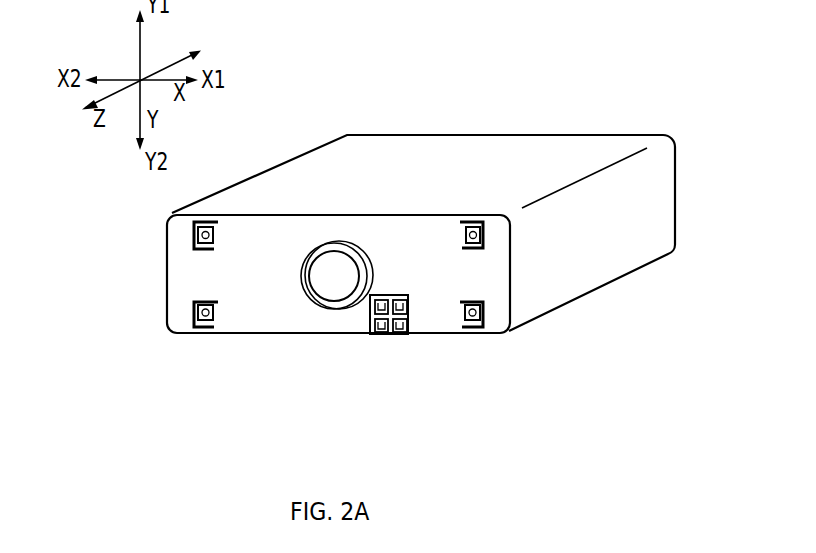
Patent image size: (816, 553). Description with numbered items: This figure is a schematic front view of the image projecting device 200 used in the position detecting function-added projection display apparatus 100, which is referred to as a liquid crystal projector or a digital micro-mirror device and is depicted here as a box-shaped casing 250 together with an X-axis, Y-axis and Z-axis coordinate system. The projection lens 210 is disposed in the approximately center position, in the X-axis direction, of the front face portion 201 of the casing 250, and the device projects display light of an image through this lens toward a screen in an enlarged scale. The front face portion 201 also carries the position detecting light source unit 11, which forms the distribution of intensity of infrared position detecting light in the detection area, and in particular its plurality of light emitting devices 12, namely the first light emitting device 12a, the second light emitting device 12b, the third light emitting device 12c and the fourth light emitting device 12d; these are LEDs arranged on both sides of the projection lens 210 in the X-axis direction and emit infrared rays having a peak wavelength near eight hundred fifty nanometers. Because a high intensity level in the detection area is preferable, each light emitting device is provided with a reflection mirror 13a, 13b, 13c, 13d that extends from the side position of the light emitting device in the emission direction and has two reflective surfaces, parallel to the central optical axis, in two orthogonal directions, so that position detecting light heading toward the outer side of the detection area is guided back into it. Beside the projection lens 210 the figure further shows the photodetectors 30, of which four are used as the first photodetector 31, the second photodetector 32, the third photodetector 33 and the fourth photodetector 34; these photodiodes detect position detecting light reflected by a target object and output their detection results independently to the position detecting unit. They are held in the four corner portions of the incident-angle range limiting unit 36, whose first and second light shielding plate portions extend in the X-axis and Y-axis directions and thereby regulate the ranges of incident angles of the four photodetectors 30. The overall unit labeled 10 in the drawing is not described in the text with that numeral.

The camera module 10 is at (262, 360).
The position detecting light source unit 11 is at (530, 72).
The light emitting devices 12 is at (373, 195).
The first light emitting device 12a is at (478, 306).
The second light emitting device 12b is at (212, 235).
The third light emitting device 12c is at (212, 306).
The fourth light emitting device 12d is at (468, 235).
The reflection mirror 13a is at (488, 326).
The reflection mirror 13b is at (193, 236).
The reflection mirror 13c is at (208, 326).
The reflection mirror 13d is at (473, 226).
The photodetector 30 is at (402, 314).
The first photodetector 31 is at (402, 333).
The second photodetector 32 is at (385, 299).
The third photodetector 33 is at (379, 333).
The fourth photodetector 34 is at (404, 297).
The incident-angle range limiting unit 36 is at (392, 334).
The position detecting function-added projection display apparatus 100 is at (309, 123).
The image projecting device 200 is at (620, 119).
The front face portion 201 is at (177, 333).
The projection lens 210 is at (316, 286).
The casing 250 is at (600, 277).